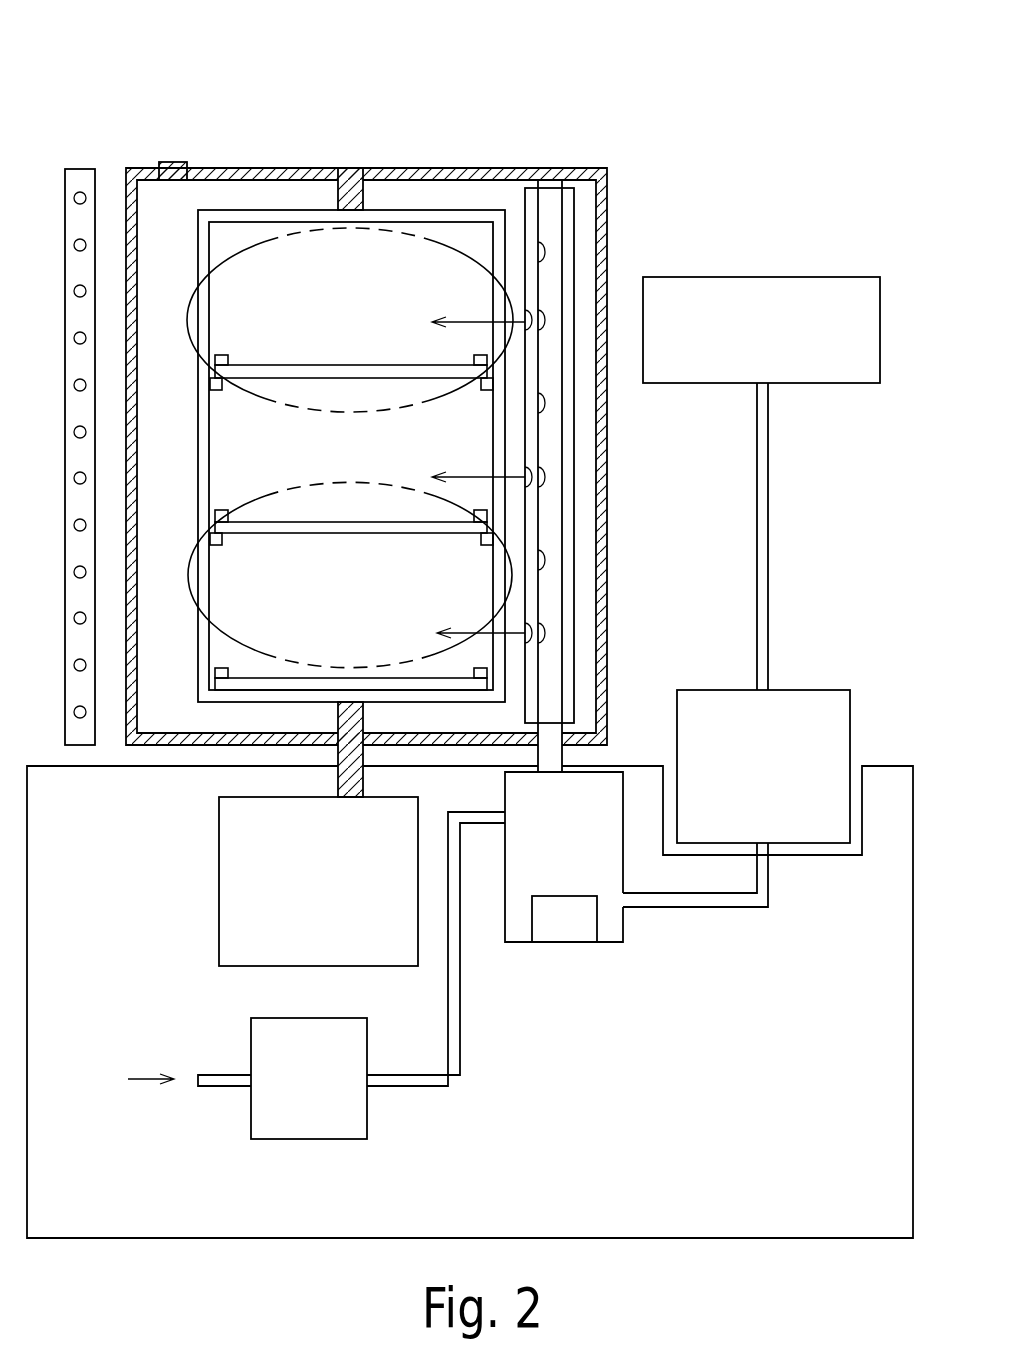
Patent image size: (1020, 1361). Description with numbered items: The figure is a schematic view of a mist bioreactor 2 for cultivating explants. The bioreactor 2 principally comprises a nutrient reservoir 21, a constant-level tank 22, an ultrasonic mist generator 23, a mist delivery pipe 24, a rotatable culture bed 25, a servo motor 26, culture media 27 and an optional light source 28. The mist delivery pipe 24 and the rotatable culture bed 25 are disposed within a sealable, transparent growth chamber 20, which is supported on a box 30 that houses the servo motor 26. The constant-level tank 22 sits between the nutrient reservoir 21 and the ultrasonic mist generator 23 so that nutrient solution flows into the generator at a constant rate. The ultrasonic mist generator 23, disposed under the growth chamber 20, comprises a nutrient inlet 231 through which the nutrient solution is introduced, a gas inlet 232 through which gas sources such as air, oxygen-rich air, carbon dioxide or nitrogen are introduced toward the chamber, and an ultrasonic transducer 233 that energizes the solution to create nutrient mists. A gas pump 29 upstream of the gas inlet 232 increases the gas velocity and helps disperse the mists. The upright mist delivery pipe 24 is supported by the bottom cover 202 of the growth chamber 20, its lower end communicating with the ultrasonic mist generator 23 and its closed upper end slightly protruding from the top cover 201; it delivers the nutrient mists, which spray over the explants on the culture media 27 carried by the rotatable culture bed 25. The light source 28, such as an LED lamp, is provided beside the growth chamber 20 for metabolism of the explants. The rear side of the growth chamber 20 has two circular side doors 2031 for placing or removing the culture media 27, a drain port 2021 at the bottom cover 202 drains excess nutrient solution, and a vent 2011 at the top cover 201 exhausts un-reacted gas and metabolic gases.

The bioreactor 2 is at (108, 28).
The growth chamber 20 is at (366, 424).
The top cover 201 is at (318, 177).
The vent 2011 is at (173, 168).
The bottom cover 202 is at (243, 745).
The drain port 2021 is at (177, 737).
The side doors 2031 is at (275, 240).
The rotatable culture bed 25 is at (425, 215).
The culture medium 27 is at (468, 370).
The mist delivery pipe 24 is at (568, 192).
The nutrient reservoir 21 is at (713, 277).
The constant-level tank 22 is at (713, 690).
The ultrasonic mist generator 23 is at (567, 922).
The nutrient inlet 231 is at (627, 900).
The gas inlet 232 is at (485, 813).
The ultrasonic transducer 233 is at (552, 927).
The servo motor 26 is at (301, 953).
The light source 28 is at (83, 178).
The gas pump 29 is at (319, 1122).
The box 30 is at (770, 1218).